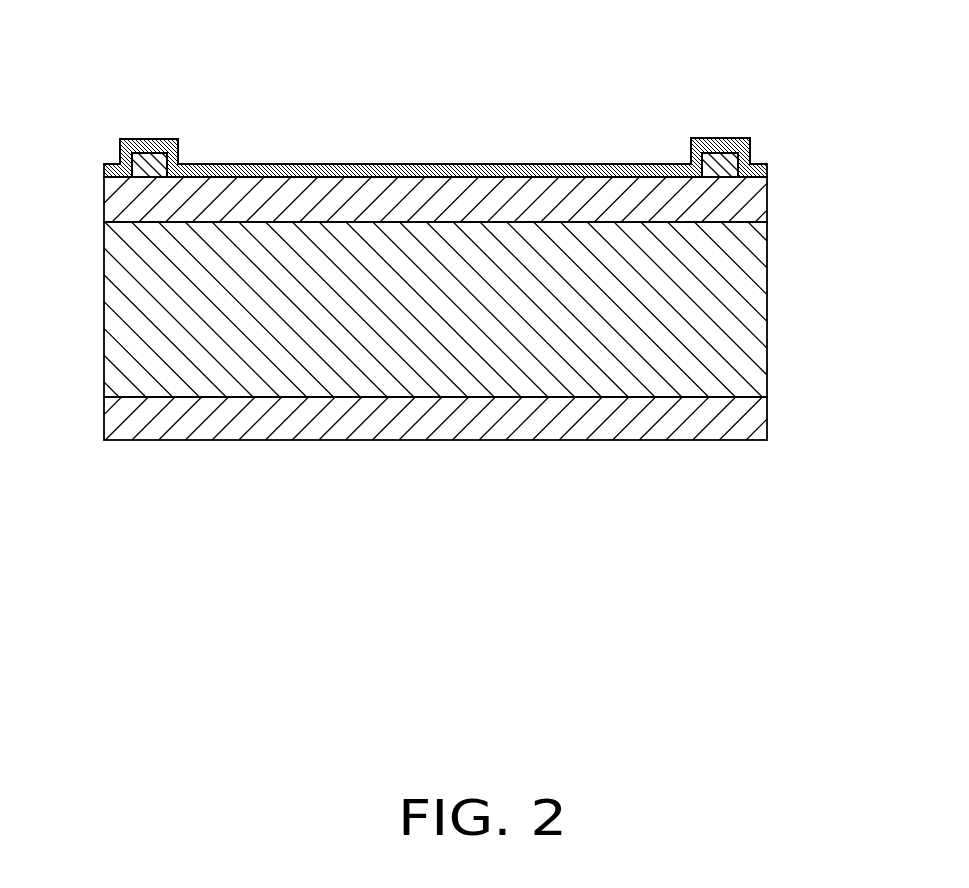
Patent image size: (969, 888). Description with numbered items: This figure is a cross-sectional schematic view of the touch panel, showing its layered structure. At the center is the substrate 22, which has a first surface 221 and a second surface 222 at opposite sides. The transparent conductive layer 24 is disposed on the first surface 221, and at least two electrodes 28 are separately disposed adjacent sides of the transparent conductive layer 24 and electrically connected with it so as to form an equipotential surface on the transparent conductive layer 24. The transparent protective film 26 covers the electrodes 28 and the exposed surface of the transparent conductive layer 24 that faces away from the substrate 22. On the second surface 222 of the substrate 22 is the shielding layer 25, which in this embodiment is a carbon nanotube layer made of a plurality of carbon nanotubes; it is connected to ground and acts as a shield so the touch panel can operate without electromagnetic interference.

The substrate 22 is at (703, 327).
The first surface 221 is at (197, 225).
The second surface 222 is at (205, 395).
The transparent conductive layer 24 is at (730, 203).
The shielding layer 25 is at (597, 415).
The transparent protective film 26 is at (289, 173).
The electrodes 28 is at (150, 157).